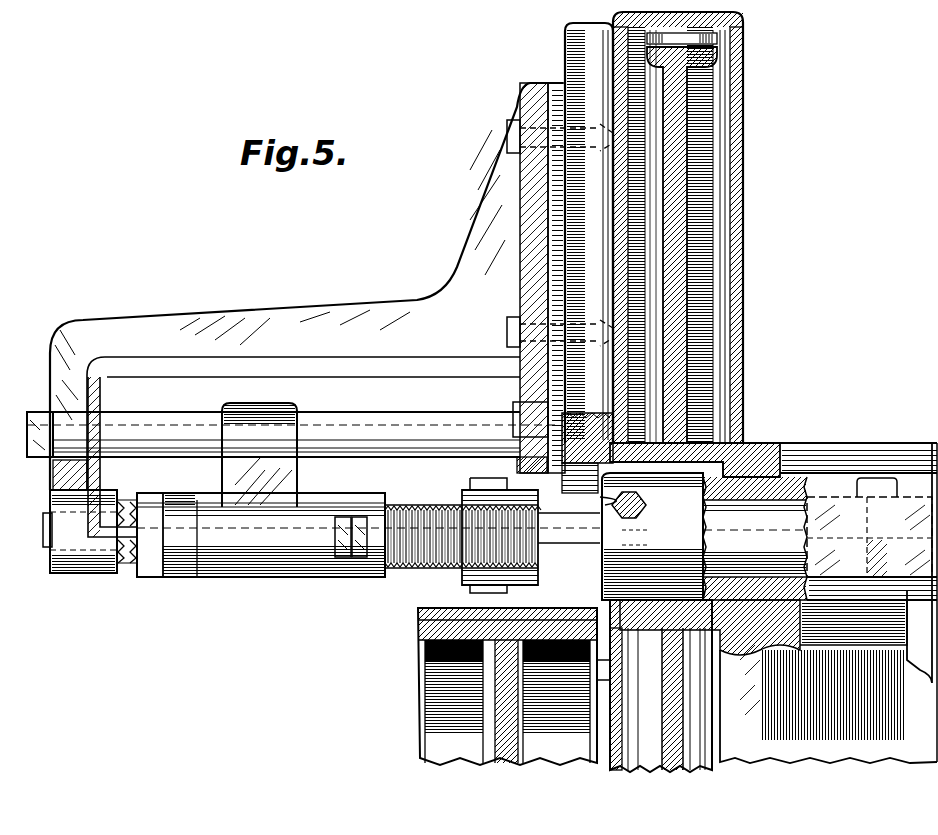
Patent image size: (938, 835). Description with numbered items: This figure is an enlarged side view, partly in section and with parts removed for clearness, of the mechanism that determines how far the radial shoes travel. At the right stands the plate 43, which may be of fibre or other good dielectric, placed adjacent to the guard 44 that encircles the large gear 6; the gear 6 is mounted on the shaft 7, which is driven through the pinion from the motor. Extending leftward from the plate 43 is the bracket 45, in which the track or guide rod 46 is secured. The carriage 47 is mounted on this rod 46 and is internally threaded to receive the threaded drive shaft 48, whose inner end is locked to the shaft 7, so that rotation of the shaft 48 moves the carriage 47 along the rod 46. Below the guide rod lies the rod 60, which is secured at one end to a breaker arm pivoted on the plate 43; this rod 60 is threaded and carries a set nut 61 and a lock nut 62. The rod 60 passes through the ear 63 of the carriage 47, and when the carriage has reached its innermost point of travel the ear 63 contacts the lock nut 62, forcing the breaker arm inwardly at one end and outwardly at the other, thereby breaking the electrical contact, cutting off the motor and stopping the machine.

The plate 43 is at (565, 56).
The guard 44 is at (738, 42).
The large gear 6 is at (720, 60).
The bracket 45 is at (367, 317).
The track or guide rod 46 is at (388, 432).
The carriage 47 is at (265, 570).
The threaded drive shaft 48 is at (420, 568).
The rod 60 is at (197, 548).
The set nut 61 is at (360, 515).
The lock nut 62 is at (340, 515).
The ear 63 is at (145, 548).
The shaft 7 is at (762, 523).